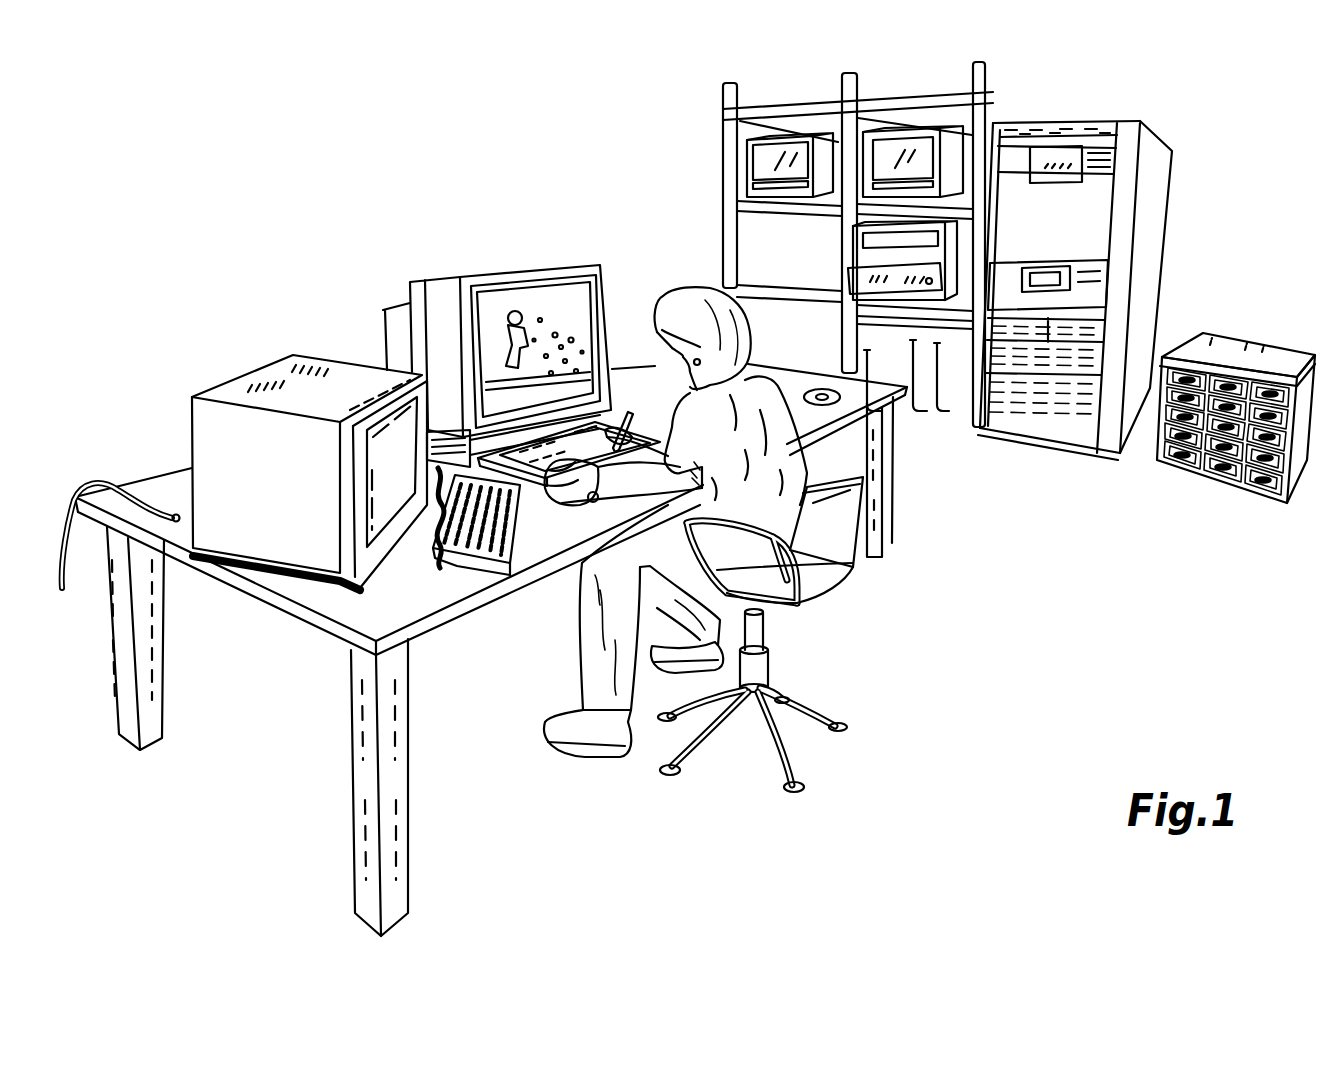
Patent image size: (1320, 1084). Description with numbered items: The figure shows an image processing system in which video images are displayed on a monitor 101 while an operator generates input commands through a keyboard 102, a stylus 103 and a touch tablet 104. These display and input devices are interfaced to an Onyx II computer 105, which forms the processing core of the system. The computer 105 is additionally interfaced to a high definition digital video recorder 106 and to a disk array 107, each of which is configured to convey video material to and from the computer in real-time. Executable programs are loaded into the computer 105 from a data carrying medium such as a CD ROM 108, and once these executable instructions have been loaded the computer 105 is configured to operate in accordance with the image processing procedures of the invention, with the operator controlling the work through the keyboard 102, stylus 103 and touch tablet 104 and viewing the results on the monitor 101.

The monitor 101 is at (437, 329).
The keyboard 102 is at (475, 517).
The stylus 103 is at (612, 445).
The touch tablet 104 is at (561, 448).
The Onyx II computer 105 is at (1065, 390).
The high definition digital video recorder 106 is at (930, 257).
The disk array 107 is at (1237, 348).
The CD ROM 108 is at (837, 400).